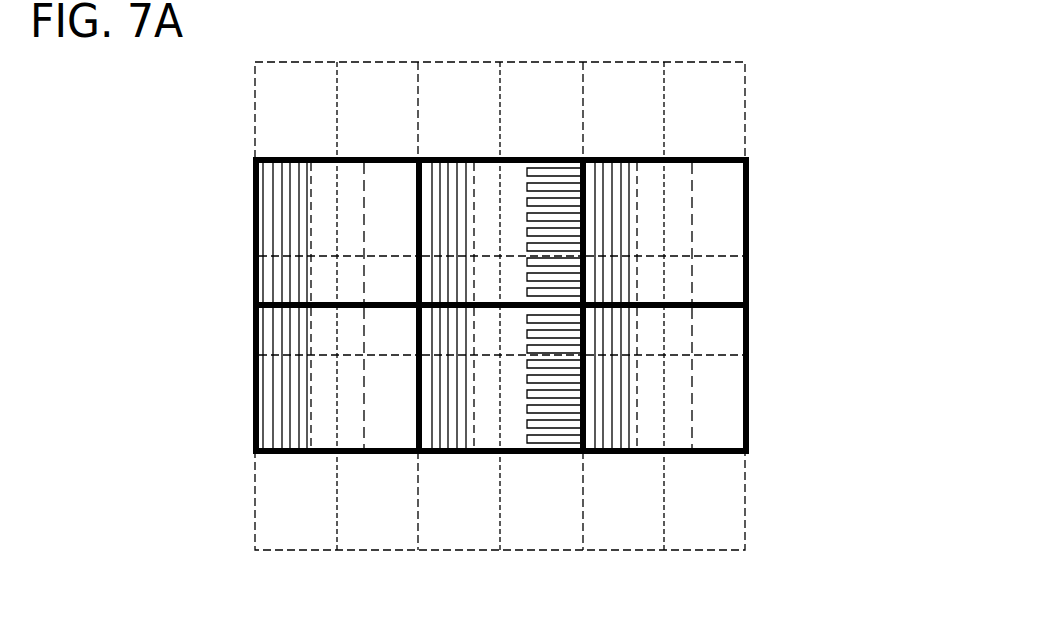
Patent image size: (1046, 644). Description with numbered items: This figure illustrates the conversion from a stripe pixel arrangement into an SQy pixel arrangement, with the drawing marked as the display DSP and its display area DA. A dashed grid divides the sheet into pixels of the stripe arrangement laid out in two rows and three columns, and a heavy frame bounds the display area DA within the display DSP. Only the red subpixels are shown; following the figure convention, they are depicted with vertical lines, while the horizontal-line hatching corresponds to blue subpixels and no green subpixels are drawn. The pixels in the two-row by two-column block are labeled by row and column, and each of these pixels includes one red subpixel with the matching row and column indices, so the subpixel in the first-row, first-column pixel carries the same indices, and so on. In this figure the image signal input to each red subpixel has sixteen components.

The display device DSP is at (806, 112).
The display area DA is at (806, 175).